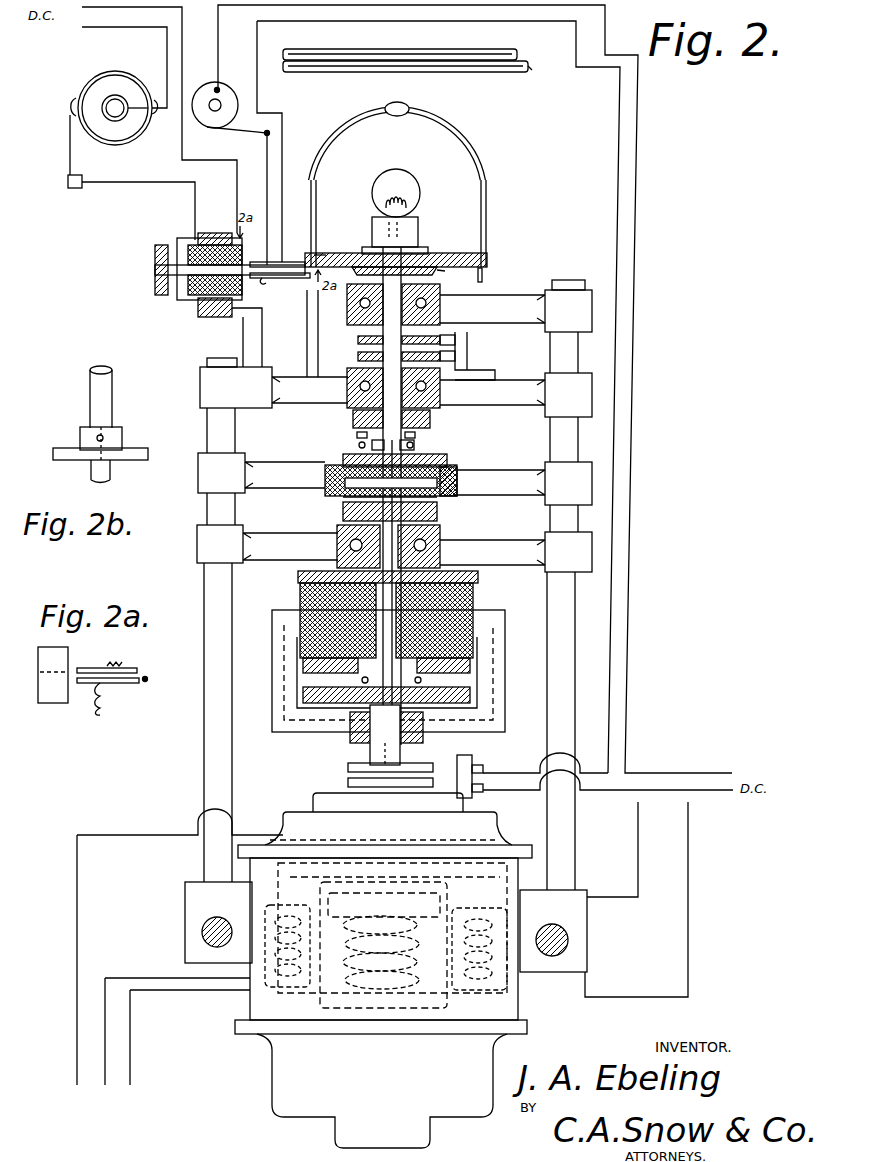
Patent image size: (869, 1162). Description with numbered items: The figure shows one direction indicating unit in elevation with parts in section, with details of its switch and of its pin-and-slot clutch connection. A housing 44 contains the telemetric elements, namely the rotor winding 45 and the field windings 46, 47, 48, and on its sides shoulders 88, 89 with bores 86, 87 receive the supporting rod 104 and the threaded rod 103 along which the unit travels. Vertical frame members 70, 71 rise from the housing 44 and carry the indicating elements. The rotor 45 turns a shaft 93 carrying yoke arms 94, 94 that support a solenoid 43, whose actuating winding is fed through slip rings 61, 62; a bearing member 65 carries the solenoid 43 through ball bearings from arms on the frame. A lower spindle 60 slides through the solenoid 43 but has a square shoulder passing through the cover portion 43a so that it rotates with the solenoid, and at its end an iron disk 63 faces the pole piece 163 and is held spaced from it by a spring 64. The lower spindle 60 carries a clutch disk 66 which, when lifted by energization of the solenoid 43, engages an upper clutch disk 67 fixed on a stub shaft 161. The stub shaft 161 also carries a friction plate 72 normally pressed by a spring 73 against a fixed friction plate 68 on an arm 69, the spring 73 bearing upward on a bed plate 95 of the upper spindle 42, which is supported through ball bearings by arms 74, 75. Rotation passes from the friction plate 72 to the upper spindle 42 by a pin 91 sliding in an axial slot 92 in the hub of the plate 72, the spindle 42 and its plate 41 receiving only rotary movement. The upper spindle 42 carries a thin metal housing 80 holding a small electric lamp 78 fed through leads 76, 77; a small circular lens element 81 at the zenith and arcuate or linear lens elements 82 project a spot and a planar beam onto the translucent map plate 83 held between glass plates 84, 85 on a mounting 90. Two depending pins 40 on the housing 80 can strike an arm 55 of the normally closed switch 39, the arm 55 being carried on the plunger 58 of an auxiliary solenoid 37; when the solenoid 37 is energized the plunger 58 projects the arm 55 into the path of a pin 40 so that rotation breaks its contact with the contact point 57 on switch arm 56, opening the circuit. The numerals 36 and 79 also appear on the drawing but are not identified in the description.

In FIG. 2, the ammeter gauge 36 is at (88, 88).
In FIG. 2, the vertically depending pin 40 is at (222, 92).
In FIG. 2A, the vertically depending pin 40 is at (147, 677).
In FIG. 2, the glass plate 84 is at (427, 52).
In FIG. 2, the translucent map plate 83 is at (518, 57).
In FIG. 2, the glass plate 85 is at (415, 68).
In FIG. 2, the mounting 90 is at (532, 70).
In FIG. 2, the arcuate or linear lens element 82 is at (324, 145).
In FIG. 2, the small circular lens element 81 is at (397, 116).
In FIG. 2, the housing 80 is at (487, 223).
In FIG. 2, the small electric lamp 78 is at (420, 196).
In FIG. 2, the plate 41 is at (490, 260).
In FIG. 2, the plate boss 79 is at (442, 270).
In FIG. 2, the switch arm 55 is at (318, 258).
In FIG. 2A, the switch arm 55 is at (136, 684).
In FIG. 2, the contact point 57 is at (298, 262).
In FIG. 2A, the contact point 57 is at (138, 665).
In FIG. 2, the plunger 58 is at (155, 270).
In FIG. 2A, the plunger 58 is at (42, 688).
In FIG. 2, the auxiliary solenoid 37 is at (225, 240).
In FIG. 2A, the auxiliary solenoid 37 is at (58, 703).
In FIG. 2, the normally closed switch element 39 is at (262, 280).
In FIG. 2A, the normally closed switch element 39 is at (102, 708).
In FIG. 2, the switch arm 56 is at (296, 280).
In FIG. 2A, the switch arm 56 is at (104, 666).
In FIG. 2, the vertical frame member 71 is at (204, 745).
In FIG. 2, the arm 74 is at (286, 378).
In FIG. 2, the vertical frame member 70 is at (568, 585).
In FIG. 2, the arm 75 is at (448, 310).
In FIG. 2, the arm 69 is at (507, 472).
In FIG. 2, the cover portion 43a is at (460, 572).
In FIG. 2, the upper spindle 42 is at (440, 392).
In FIG. 2B, the upper spindle 42 is at (112, 390).
In FIG. 2, the lower spindle 60 is at (440, 530).
In FIG. 2, the lead 77 is at (483, 341).
In FIG. 2, the lead 76 is at (483, 357).
In FIG. 2, the bed plate 95 is at (353, 417).
In FIG. 2, the spring 73 is at (357, 440).
In FIG. 2, the axial slot 92 is at (415, 440).
In FIG. 2B, the axial slot 92 is at (96, 438).
In FIG. 2, the pin 91 is at (418, 452).
In FIG. 2B, the pin 91 is at (122, 437).
In FIG. 2, the friction plate 72 is at (343, 458).
In FIG. 2B, the friction plate 72 is at (53, 455).
In FIG. 2, the stub shaft 161 is at (325, 480).
In FIG. 2B, the stub shaft 161 is at (110, 468).
In FIG. 2, the friction plate 68 is at (458, 478).
In FIG. 2, the upper clutch disk 67 is at (343, 498).
In FIG. 2, the lower clutch disk 66 is at (343, 512).
In FIG. 2, the bearing member 65 is at (300, 578).
In FIG. 2, the solenoid 43 is at (473, 600).
In FIG. 2, the spring 64 is at (470, 666).
In FIG. 2, the pole piece 163 is at (420, 680).
In FIG. 2, the iron disk 63 is at (472, 696).
In FIG. 2, the yoke arm 94 is at (278, 728).
In FIG. 2, the shaft 93 is at (360, 745).
In FIG. 2, the slip ring 61 is at (462, 762).
In FIG. 2, the slip ring 62 is at (443, 790).
In FIG. 2, the housing 44 is at (250, 1006).
In FIG. 2, the rotor winding 45 is at (392, 935).
In FIG. 2, the field winding 46 is at (278, 922).
In FIG. 2, the field winding 48 is at (479, 932).
In FIG. 2, the field winding 47 is at (470, 938).
In FIG. 2, the shoulder 89 is at (185, 890).
In FIG. 2, the bore 87 is at (194, 937).
In FIG. 2, the threaded rod 103 is at (210, 938).
In FIG. 2, the shoulder 88 is at (585, 915).
In FIG. 2, the bore 86 is at (577, 946).
In FIG. 2, the rod 104 is at (555, 948).